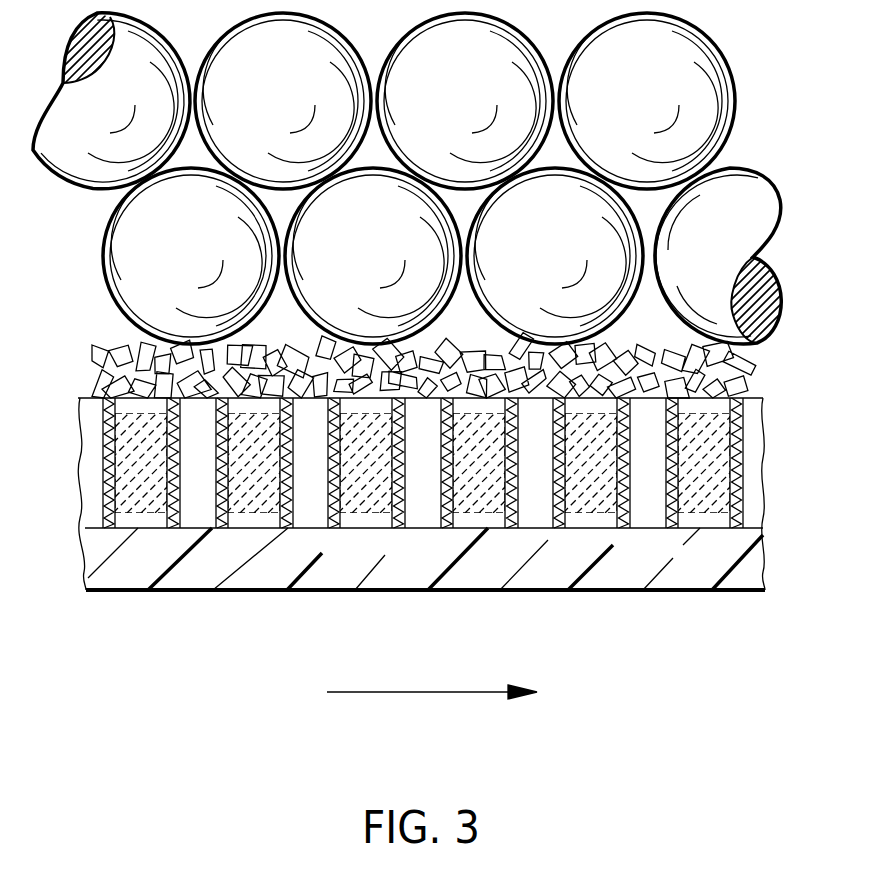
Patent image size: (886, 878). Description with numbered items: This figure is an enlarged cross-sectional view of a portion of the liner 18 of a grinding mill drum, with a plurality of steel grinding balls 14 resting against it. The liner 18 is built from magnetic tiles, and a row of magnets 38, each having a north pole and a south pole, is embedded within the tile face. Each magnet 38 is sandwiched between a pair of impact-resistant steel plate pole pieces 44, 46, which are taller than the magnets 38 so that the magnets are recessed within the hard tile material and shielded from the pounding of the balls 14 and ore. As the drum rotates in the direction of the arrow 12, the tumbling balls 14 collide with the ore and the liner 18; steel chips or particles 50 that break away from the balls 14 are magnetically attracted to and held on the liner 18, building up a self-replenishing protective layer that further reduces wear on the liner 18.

The arrows 12 is at (428, 692).
The steel grinding balls 14 is at (0, 11).
The liner 18 is at (65, 398).
The magnets 38 is at (150, 505).
The pole piece 44 is at (103, 530).
The pole piece 46 is at (193, 528).
The steel chips or particles 50 is at (764, 372).